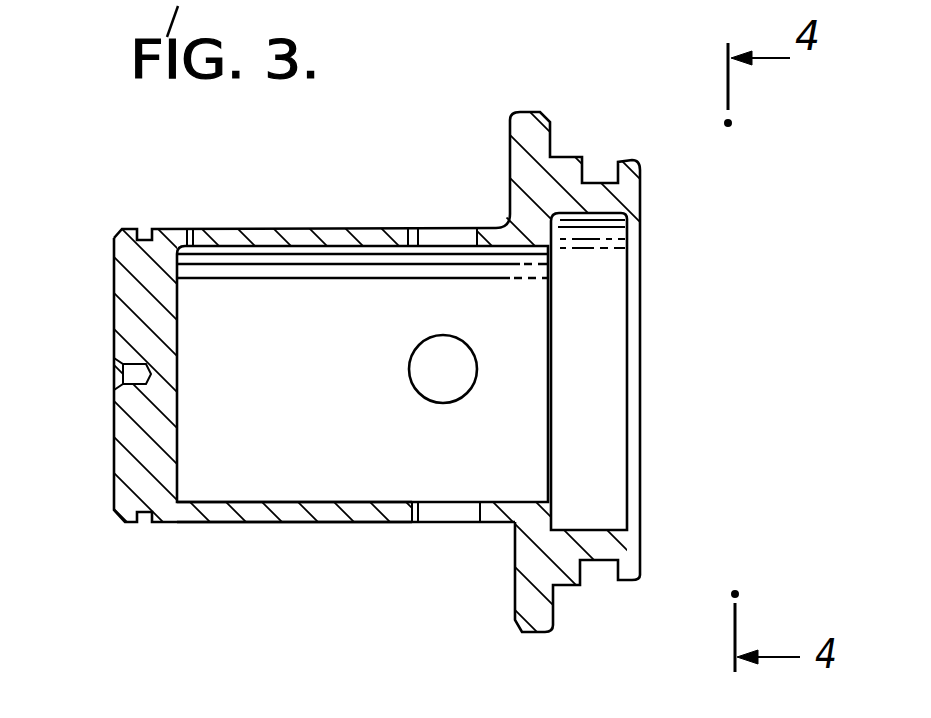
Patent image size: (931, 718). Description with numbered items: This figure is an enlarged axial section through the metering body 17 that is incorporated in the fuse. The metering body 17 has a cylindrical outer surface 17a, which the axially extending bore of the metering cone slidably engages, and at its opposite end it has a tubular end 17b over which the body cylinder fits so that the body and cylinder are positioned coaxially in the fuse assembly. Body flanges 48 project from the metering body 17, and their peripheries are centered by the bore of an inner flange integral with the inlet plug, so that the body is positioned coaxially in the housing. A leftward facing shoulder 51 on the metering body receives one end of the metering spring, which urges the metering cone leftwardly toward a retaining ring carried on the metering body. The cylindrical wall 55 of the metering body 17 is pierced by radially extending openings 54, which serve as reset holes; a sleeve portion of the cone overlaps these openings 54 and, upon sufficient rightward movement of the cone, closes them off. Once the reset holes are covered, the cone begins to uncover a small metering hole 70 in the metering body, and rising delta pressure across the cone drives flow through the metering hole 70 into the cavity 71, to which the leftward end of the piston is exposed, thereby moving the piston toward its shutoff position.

The metering body 17 is at (465, 359).
The cylindrical outer surface 17a is at (199, 226).
The tubular end 17b is at (465, 359).
The body flanges 48 is at (532, 112).
The leftward facing shoulder 51 is at (513, 533).
The openings 54 is at (468, 380).
The cylindrical wall 55 is at (333, 514).
The metering hole 70 is at (190, 237).
The cavity 71 is at (326, 360).